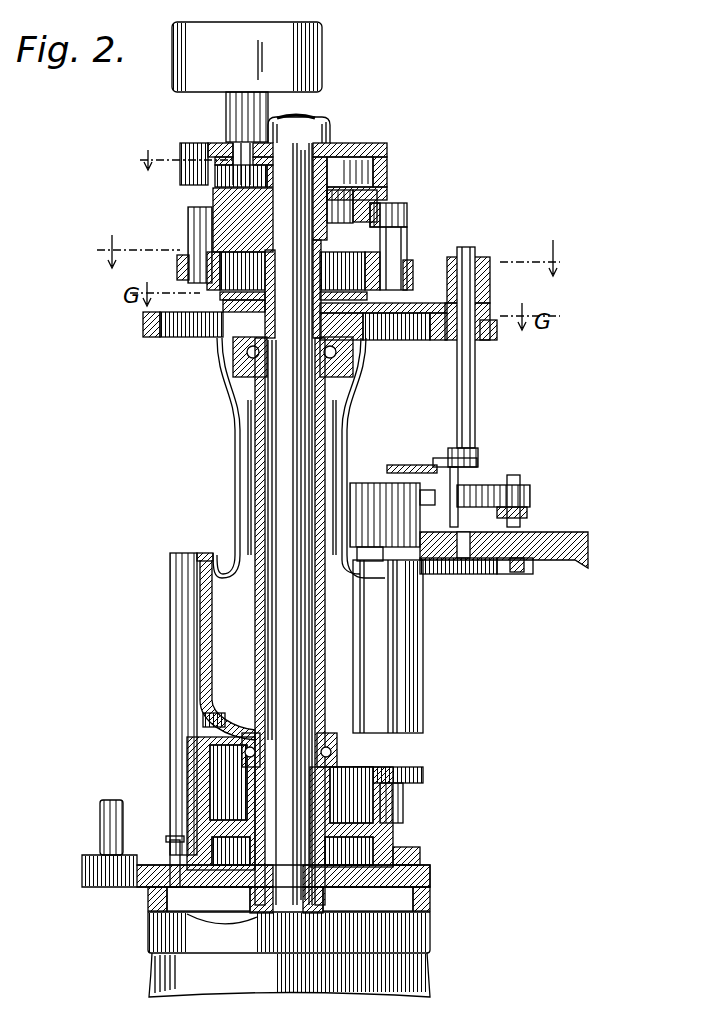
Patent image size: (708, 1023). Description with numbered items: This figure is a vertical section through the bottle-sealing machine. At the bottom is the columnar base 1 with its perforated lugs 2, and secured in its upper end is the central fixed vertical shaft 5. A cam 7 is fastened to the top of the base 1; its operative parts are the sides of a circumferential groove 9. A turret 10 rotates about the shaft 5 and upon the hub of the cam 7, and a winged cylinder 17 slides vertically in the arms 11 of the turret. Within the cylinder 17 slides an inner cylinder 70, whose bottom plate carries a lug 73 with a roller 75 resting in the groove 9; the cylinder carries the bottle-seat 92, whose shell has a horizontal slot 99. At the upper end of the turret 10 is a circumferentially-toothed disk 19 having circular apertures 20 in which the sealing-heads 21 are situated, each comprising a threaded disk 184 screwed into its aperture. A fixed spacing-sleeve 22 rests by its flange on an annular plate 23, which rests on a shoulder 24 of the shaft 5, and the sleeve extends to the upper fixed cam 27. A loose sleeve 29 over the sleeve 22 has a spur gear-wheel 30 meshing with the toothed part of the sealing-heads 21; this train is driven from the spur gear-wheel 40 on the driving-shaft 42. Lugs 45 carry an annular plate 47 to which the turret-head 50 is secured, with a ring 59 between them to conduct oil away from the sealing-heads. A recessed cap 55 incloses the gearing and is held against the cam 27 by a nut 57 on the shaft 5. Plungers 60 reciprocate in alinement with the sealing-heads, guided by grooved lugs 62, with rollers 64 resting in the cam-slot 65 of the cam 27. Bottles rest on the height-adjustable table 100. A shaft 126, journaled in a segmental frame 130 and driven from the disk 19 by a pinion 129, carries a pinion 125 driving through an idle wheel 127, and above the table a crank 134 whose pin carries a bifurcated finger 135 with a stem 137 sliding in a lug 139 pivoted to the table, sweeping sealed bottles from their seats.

The columnar base 1 is at (160, 972).
The perforated lugs 2 is at (86, 872).
The central fixed vertical shaft 5 is at (382, 652).
The cam 7 is at (187, 820).
The circumferential groove 9 is at (191, 764).
The turret 10 is at (255, 644).
The arms of the turret 11 is at (226, 561).
The winged cylinder 17 is at (426, 682).
The circumferentially-toothed disk 19 is at (143, 338).
The circular apertures 20 is at (233, 356).
The sealing-heads 21 is at (387, 322).
The fixed spacing-sleeve 22 is at (255, 417).
The annular plate 23 is at (364, 380).
The shoulder 24 is at (248, 442).
The upper fixed cam 27 is at (213, 206).
The loose sleeve 29 is at (188, 242).
The spur gear-wheel 30 is at (220, 380).
The spur gear-wheel 40 is at (215, 178).
The driving-shaft 42 is at (245, 140).
The lugs 45 is at (143, 323).
The annular plate 47 is at (472, 251).
The turret-head 50 is at (220, 274).
The recessed cap 55 is at (396, 181).
The nut 57 is at (330, 136).
The ring 59 is at (406, 273).
The plungers 60 is at (408, 213).
The grooved lugs 62 is at (183, 256).
The rollers 64 is at (380, 198).
The cam-slot 65 is at (207, 270).
The inner cylinder 70 is at (411, 766).
The lug 73 is at (405, 808).
The roller 75 is at (396, 842).
The bottle-seat 92 is at (366, 483).
The horizontal slot 99 is at (405, 512).
The table 100 is at (589, 548).
The pinion 125 is at (467, 577).
The shaft 126 is at (477, 433).
The idle wheel 127 is at (494, 577).
The pinion 129 is at (497, 341).
The segmental frame 130 is at (491, 297).
The crank 134 is at (479, 462).
The bifurcated finger 135 is at (436, 463).
The tailpiece or stem 137 is at (521, 480).
The lug 139 is at (531, 514).
The threaded disk 184 is at (392, 382).